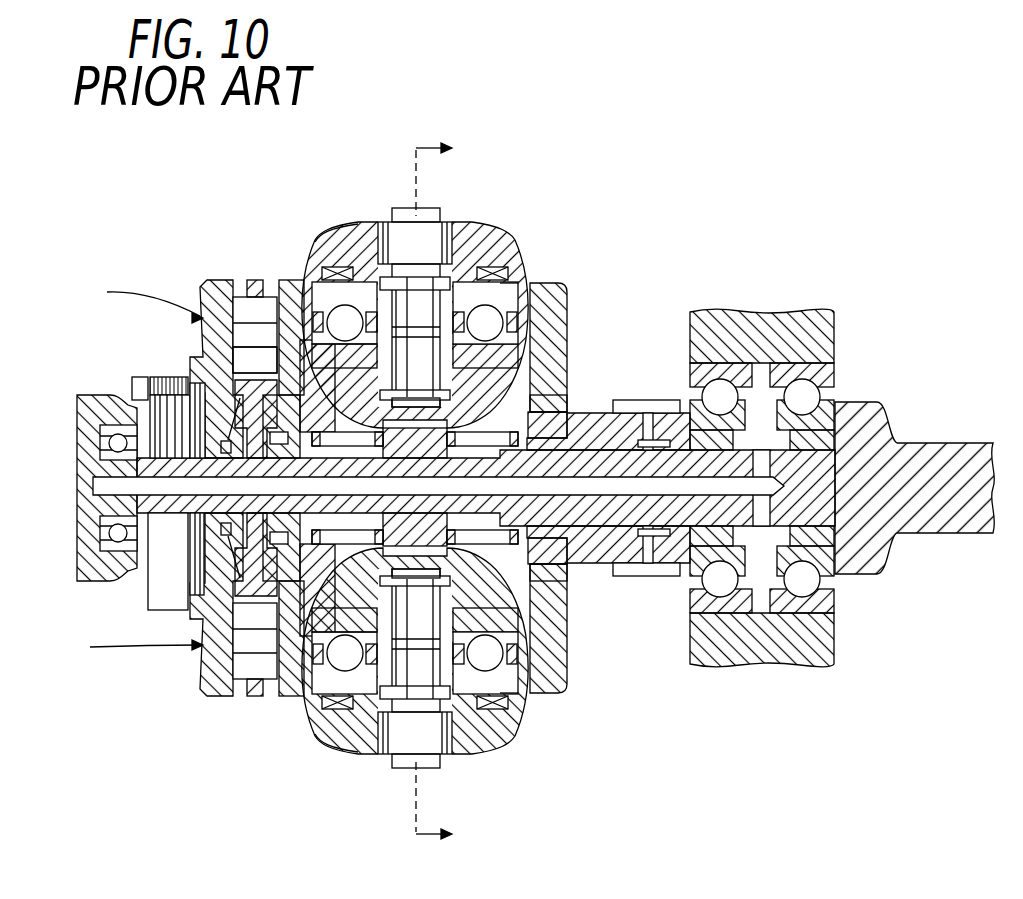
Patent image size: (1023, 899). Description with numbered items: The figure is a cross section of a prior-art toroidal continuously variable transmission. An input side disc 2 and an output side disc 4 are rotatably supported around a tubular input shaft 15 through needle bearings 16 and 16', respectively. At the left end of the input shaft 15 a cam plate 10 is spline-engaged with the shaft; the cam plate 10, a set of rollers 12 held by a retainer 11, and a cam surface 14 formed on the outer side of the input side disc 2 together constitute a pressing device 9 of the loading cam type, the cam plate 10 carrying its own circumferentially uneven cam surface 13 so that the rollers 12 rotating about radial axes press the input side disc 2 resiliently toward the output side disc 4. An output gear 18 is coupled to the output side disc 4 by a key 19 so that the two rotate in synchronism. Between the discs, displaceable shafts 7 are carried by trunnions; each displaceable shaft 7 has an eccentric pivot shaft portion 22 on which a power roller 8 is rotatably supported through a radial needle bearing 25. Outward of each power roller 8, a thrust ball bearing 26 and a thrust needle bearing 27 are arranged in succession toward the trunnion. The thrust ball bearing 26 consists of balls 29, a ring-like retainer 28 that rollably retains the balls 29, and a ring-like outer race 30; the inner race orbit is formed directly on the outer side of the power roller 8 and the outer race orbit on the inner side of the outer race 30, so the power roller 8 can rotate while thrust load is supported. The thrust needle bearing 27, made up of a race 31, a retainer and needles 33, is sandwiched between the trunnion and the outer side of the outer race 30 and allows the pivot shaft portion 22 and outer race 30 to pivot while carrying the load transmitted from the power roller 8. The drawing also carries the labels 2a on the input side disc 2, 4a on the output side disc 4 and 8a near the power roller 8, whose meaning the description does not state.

The input side disc 2 is at (282, 292).
The housing bore 2a is at (368, 413).
The output side disc 4 is at (567, 300).
The cover flange 4a is at (528, 360).
The displaceable shaft 7 is at (435, 295).
The power roller 8 is at (293, 415).
The plate 8a is at (303, 362).
The pressing device 9 is at (138, 467).
The cam plate 10 is at (203, 325).
The retainer 11 is at (453, 494).
The roller 12 is at (238, 308).
The cam surface 13 is at (243, 278).
The cam surface 14 is at (248, 278).
The tubular input shaft 15 is at (878, 408).
The needle bearing 16 is at (415, 484).
The needle bearing 16' is at (623, 481).
The output gear 18 is at (700, 410).
The key 19 is at (575, 445).
The pivot shaft portion 22 is at (409, 340).
The radial needle bearing 25 is at (548, 382).
The thrust ball bearing 26 is at (500, 315).
The thrust needle bearing 27 is at (510, 283).
The ring-like retainer 28 is at (505, 323).
The ball 29 is at (300, 330).
The outer race 30 is at (298, 282).
The race 31 is at (345, 280).
The needle 33 is at (333, 265).